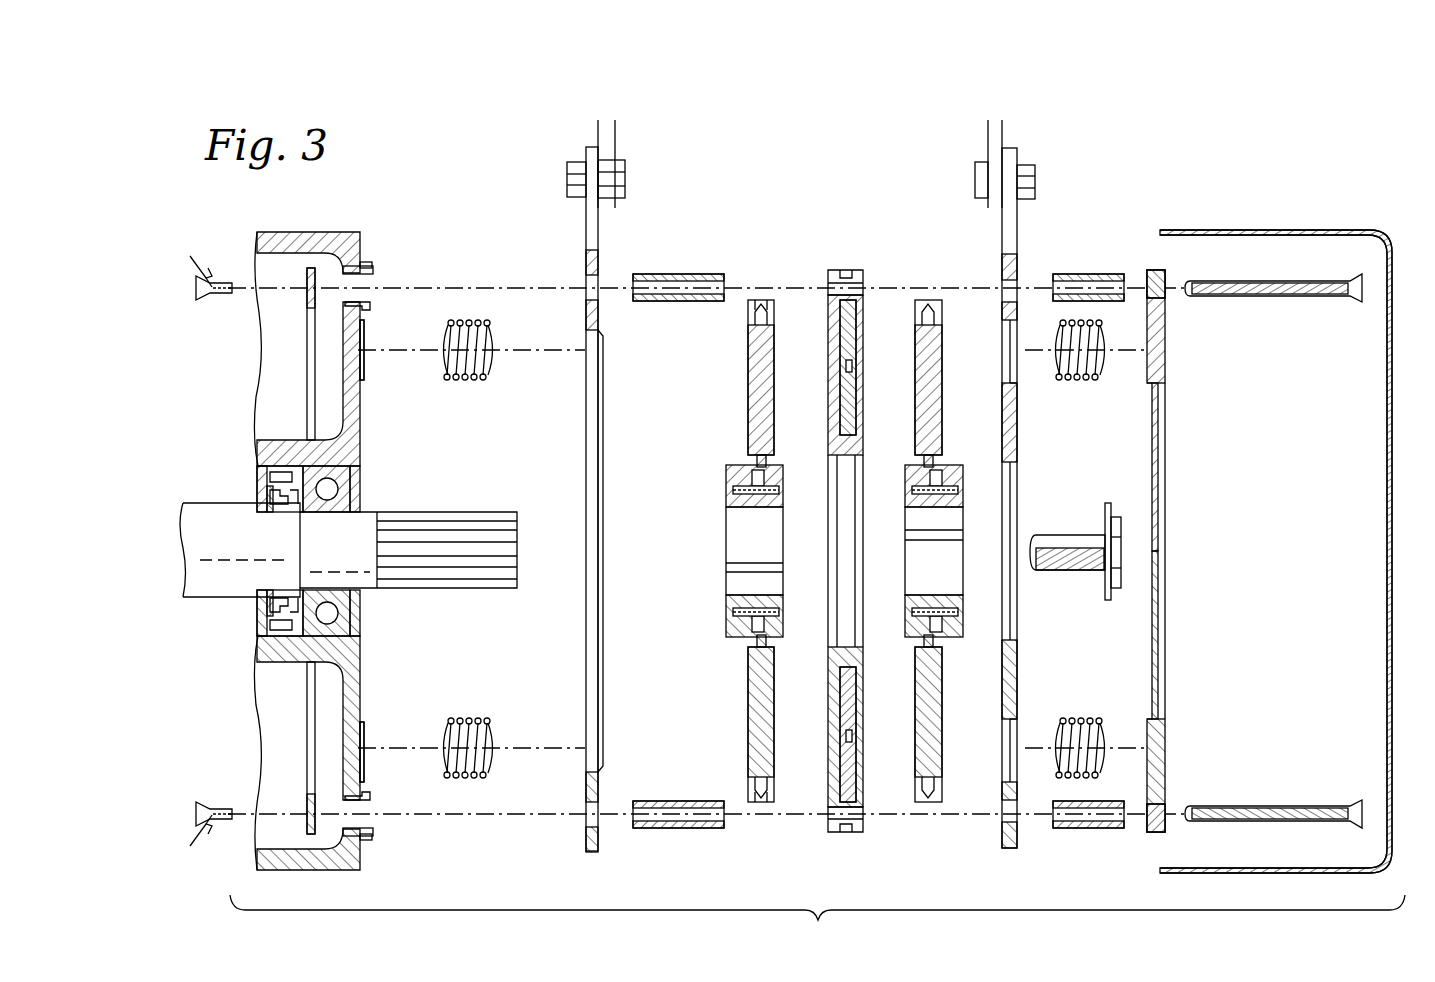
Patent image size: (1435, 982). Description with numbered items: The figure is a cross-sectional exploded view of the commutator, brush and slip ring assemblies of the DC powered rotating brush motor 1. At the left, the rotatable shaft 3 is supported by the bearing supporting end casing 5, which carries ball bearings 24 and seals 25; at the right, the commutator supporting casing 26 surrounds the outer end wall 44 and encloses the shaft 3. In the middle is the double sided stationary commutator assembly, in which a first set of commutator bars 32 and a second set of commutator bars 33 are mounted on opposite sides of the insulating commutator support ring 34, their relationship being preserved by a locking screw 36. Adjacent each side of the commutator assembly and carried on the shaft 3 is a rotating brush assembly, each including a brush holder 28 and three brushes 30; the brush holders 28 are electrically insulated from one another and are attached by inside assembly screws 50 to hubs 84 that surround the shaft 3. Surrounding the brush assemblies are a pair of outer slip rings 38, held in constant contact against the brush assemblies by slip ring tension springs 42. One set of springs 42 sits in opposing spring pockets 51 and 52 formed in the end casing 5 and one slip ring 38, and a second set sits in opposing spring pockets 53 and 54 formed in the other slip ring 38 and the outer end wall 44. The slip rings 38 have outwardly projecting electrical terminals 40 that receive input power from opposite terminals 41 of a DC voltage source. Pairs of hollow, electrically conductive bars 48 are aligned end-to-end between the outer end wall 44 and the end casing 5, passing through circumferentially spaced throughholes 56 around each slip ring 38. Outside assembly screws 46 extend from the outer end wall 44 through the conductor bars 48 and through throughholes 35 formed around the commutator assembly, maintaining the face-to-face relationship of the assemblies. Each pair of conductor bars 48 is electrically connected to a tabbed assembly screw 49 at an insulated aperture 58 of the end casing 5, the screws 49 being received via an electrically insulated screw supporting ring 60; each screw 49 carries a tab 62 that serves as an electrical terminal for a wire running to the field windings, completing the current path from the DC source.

The rotating brush motor 1 is at (817, 925).
The rotatable shaft 3 is at (428, 518).
The bearing supporting end casing 5 is at (360, 418).
The ball bearings 24 is at (350, 489).
The seals 25 is at (257, 482).
The commutator supporting casing 26 is at (1392, 490).
The brush holder 28 is at (762, 800).
The brushes 30 is at (748, 360).
The first set of commutator bars 32 is at (828, 785).
The second set of commutator bars 33 is at (863, 765).
The commutator support ring 34 is at (857, 305).
The throughholes 35 is at (828, 282).
The locking screw 36 is at (1075, 535).
The outer slip rings 38 is at (1017, 440).
The electrical terminals 40 is at (586, 230).
The terminals of a DC voltage source 41 is at (615, 132).
The slip ring tension springs 42 is at (472, 380).
The outer end wall 44 is at (1158, 560).
The outside assembly screws 46 is at (1230, 297).
The hollow conductor bars 48 is at (680, 274).
The tabbed assembly screws 49 is at (196, 296).
The inside assembly screws 50 is at (726, 482).
The spring pocket 51 is at (364, 335).
The spring pocket 52 is at (598, 332).
The spring pocket 53 is at (1017, 380).
The spring pocket 54 is at (1150, 372).
The throughholes 56 is at (586, 282).
The insulated aperture 58 is at (362, 272).
The screw supporting ring 60 is at (307, 378).
The tab 62 is at (193, 258).
The hubs 84 is at (726, 502).